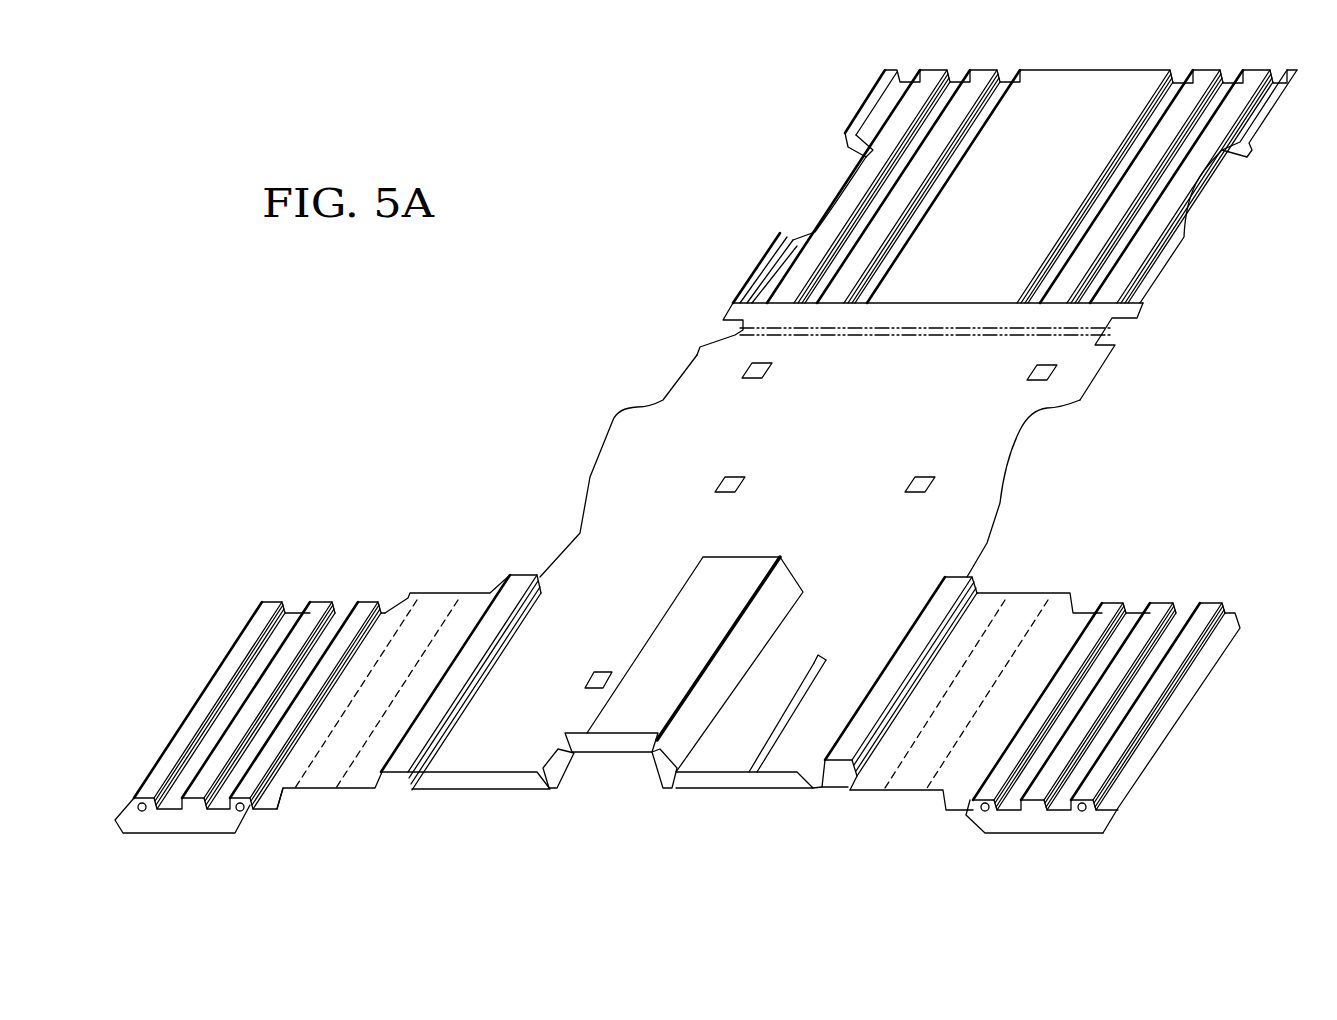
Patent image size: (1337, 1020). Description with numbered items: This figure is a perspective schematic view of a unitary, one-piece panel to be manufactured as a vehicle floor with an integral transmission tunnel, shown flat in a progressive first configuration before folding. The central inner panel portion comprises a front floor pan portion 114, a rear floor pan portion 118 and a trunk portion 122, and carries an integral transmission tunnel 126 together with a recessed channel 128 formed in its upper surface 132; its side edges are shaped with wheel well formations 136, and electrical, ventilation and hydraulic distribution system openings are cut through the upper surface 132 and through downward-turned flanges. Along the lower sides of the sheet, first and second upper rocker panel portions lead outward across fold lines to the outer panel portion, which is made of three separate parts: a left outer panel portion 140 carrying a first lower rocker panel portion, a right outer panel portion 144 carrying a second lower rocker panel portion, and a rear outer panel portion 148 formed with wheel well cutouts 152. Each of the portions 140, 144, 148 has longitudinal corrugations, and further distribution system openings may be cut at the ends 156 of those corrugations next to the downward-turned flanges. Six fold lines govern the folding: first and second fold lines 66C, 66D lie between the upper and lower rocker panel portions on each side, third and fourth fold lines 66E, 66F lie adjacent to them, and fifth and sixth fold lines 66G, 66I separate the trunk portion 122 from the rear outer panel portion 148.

The first fold line 66C is at (447, 610).
The second fold line 66D is at (1010, 610).
The third fold line 66E is at (420, 610).
The fourth fold line 66F is at (1060, 610).
The fifth fold line 66G is at (747, 337).
The sixth fold line 66I is at (735, 305).
The front floor pan portion 114 is at (577, 580).
The rear floor pan portion 118 is at (953, 482).
The trunk portion 122 is at (793, 355).
The integral transmission tunnel 126 is at (678, 633).
The recessed channel 128 is at (822, 670).
The upper surface 132 is at (920, 590).
The wheel well formations 136 is at (613, 420).
The left outer panel portion 140 is at (265, 600).
The right outer panel portion 144 is at (1172, 602).
The rear outer panel portion 148 is at (1118, 88).
The wheel well cutouts 152 is at (863, 173).
The ends of the corrugations 156 is at (228, 792).